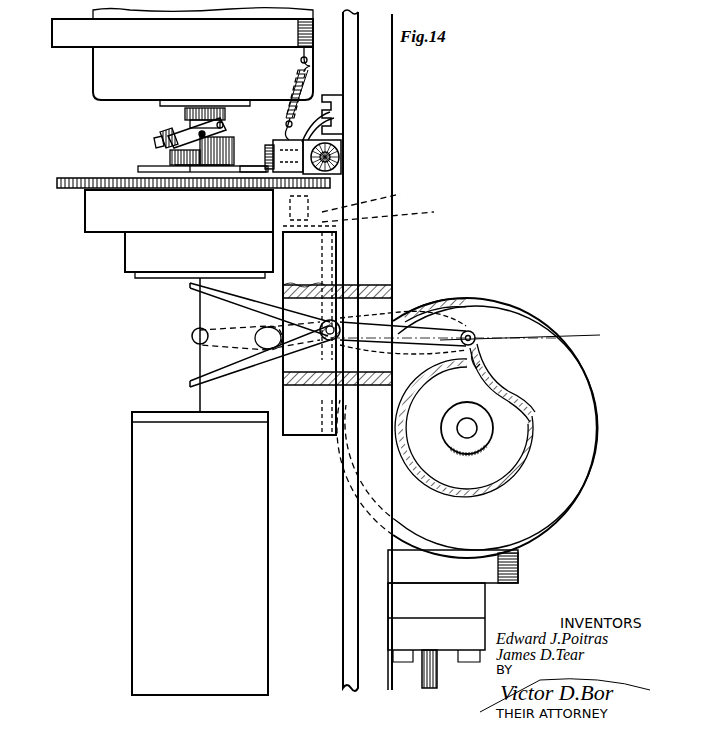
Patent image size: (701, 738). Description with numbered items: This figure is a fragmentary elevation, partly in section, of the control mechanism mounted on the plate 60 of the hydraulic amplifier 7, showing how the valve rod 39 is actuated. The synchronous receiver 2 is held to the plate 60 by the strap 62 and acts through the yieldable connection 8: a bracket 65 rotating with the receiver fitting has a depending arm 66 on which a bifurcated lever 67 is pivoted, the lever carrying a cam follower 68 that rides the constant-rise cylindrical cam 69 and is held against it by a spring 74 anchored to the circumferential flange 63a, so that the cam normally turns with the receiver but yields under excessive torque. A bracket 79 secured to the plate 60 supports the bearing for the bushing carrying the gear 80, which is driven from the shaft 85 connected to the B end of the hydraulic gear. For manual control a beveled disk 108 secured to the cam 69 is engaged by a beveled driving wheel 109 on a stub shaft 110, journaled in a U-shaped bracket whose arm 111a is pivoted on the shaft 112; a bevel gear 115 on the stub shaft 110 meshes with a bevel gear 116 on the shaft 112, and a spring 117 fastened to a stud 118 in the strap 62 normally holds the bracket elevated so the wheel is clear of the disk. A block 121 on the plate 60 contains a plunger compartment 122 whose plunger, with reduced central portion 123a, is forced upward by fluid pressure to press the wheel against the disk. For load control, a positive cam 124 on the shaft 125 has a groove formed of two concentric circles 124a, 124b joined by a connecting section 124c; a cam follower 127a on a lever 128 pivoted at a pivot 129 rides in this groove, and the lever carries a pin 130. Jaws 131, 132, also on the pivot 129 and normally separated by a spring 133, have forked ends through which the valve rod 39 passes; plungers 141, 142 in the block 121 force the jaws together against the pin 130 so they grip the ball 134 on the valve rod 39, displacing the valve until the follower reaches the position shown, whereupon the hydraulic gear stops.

The synchronous receiver 2 is at (102, 68).
The hydraulic amplifier 7 is at (142, 527).
The yieldable connection 8 is at (165, 158).
The valve rod 39 is at (199, 394).
The plate 60 is at (352, 73).
The strap 62 is at (182, 27).
The circumferential flange 63a is at (180, 165).
The bracket 65 is at (210, 108).
The depending arm 66 is at (228, 124).
The bifurcated lever 67 is at (198, 132).
The cam follower 68 is at (158, 134).
The cylindrical cam 69 is at (232, 148).
The spring 74 is at (204, 172).
The bracket 79 is at (92, 210).
The gear 80 is at (66, 178).
The shaft 85 is at (428, 668).
The disk 108 is at (140, 167).
The beveled driving wheel 109 is at (258, 173).
The stub shaft 110 is at (280, 170).
The arm of U-shaped bracket 111a is at (334, 96).
The shaft 112 is at (318, 140).
The bevel gear 115 is at (336, 122).
The bevel gear 116 is at (335, 162).
The spring 117 is at (296, 86).
The stud 118 is at (302, 54).
The block 121 is at (302, 425).
The plunger compartment 122 is at (399, 216).
The reduced central portion 123a is at (381, 198).
The positive cam 124 is at (598, 455).
The outer concentric circle of cam groove 124a is at (575, 355).
The inner concentric circle of cam groove 124b is at (462, 493).
The connecting section of cam groove 124c is at (480, 344).
The shaft 125 is at (478, 428).
The cam follower 127a is at (469, 330).
The lever 128 is at (380, 318).
The pivot 129 is at (340, 320).
The pin 130 is at (258, 344).
The jaw 131 is at (255, 305).
The jaw 132 is at (250, 362).
The spring 133 is at (380, 318).
The ball 134 is at (190, 333).
The plunger 141 is at (305, 285).
The plunger 142 is at (302, 386).